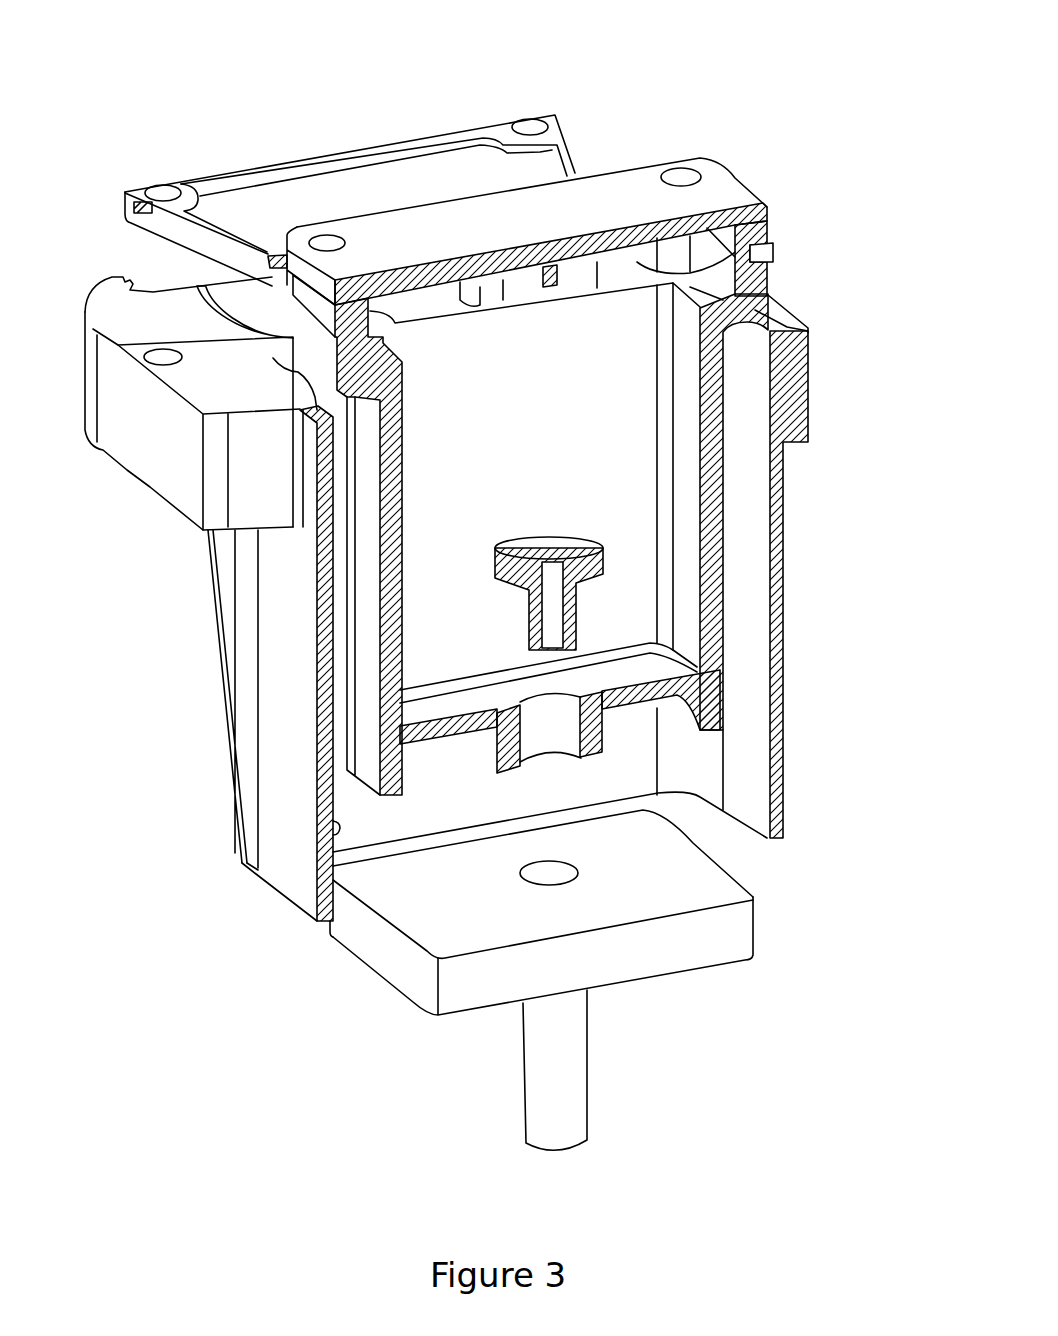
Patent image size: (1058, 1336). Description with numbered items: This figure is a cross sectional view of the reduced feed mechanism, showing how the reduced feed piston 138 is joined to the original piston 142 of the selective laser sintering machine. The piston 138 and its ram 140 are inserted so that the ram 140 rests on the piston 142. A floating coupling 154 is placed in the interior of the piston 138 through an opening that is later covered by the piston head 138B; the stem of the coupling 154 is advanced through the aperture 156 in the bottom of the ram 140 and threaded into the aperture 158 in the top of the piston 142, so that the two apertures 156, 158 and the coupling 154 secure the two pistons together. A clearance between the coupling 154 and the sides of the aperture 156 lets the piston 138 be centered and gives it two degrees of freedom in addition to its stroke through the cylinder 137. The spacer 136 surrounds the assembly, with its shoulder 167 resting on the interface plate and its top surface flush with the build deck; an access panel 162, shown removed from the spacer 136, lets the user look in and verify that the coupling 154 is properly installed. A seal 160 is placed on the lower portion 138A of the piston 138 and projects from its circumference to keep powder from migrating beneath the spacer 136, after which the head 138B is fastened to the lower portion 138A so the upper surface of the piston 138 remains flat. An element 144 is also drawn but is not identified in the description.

The piston 138 is at (688, 49).
The lower portion of the piston 138A is at (767, 285).
The piston head 138B is at (737, 173).
The seal 160 is at (767, 257).
The access panel 162 is at (473, 125).
The spacer 136 is at (110, 462).
The shoulder 167 is at (197, 532).
The ram 140 is at (380, 610).
The cylinder 137 is at (240, 848).
The floating coupling 154 is at (603, 550).
The aperture 156 is at (570, 682).
The aperture 158 is at (580, 868).
The piston 142 is at (700, 973).
The stem 144 is at (523, 1067).